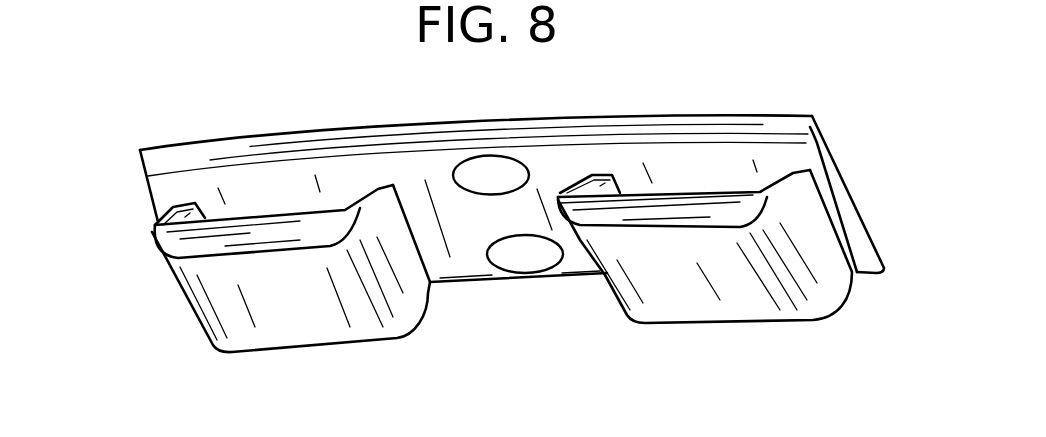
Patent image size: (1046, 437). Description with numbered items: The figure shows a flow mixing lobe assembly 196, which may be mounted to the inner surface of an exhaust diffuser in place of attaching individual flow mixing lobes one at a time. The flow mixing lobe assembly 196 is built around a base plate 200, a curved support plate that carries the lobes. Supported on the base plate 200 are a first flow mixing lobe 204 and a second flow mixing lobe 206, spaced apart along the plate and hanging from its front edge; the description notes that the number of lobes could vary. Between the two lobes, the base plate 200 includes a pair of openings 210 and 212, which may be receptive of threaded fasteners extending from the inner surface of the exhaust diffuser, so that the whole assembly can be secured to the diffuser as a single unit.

The flow mixing lobe assembly 196 is at (741, 345).
The base plate 200 is at (278, 137).
The first flow mixing lobe 204 is at (159, 313).
The second flow mixing lobe 206 is at (859, 317).
The opening 210 is at (539, 314).
The opening 212 is at (509, 177).